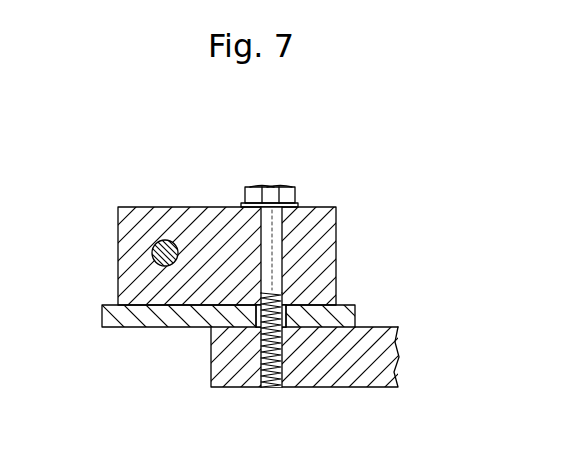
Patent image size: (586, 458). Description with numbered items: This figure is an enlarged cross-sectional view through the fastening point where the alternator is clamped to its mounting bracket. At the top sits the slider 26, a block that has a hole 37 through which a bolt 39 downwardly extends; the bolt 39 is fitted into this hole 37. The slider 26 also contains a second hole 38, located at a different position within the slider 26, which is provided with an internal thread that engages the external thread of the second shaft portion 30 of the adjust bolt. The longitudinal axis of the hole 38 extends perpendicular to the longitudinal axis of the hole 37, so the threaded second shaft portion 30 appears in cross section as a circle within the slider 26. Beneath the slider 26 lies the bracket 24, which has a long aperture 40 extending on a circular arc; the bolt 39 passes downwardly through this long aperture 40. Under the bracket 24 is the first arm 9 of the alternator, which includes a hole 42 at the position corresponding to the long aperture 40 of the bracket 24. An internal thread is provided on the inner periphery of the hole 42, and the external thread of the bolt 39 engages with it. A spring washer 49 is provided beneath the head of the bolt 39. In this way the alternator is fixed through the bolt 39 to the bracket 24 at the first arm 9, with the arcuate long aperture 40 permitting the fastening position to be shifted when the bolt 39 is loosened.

The first arm 9 is at (355, 388).
The bracket 24 is at (133, 327).
The slider 26 is at (336, 228).
The second shaft portion 30 is at (152, 253).
The hole 37 is at (316, 207).
The hole 38 is at (170, 242).
The bolt 39 is at (270, 186).
The long aperture 40 is at (290, 300).
The hole 42 is at (290, 338).
The spring washer 49 is at (282, 205).